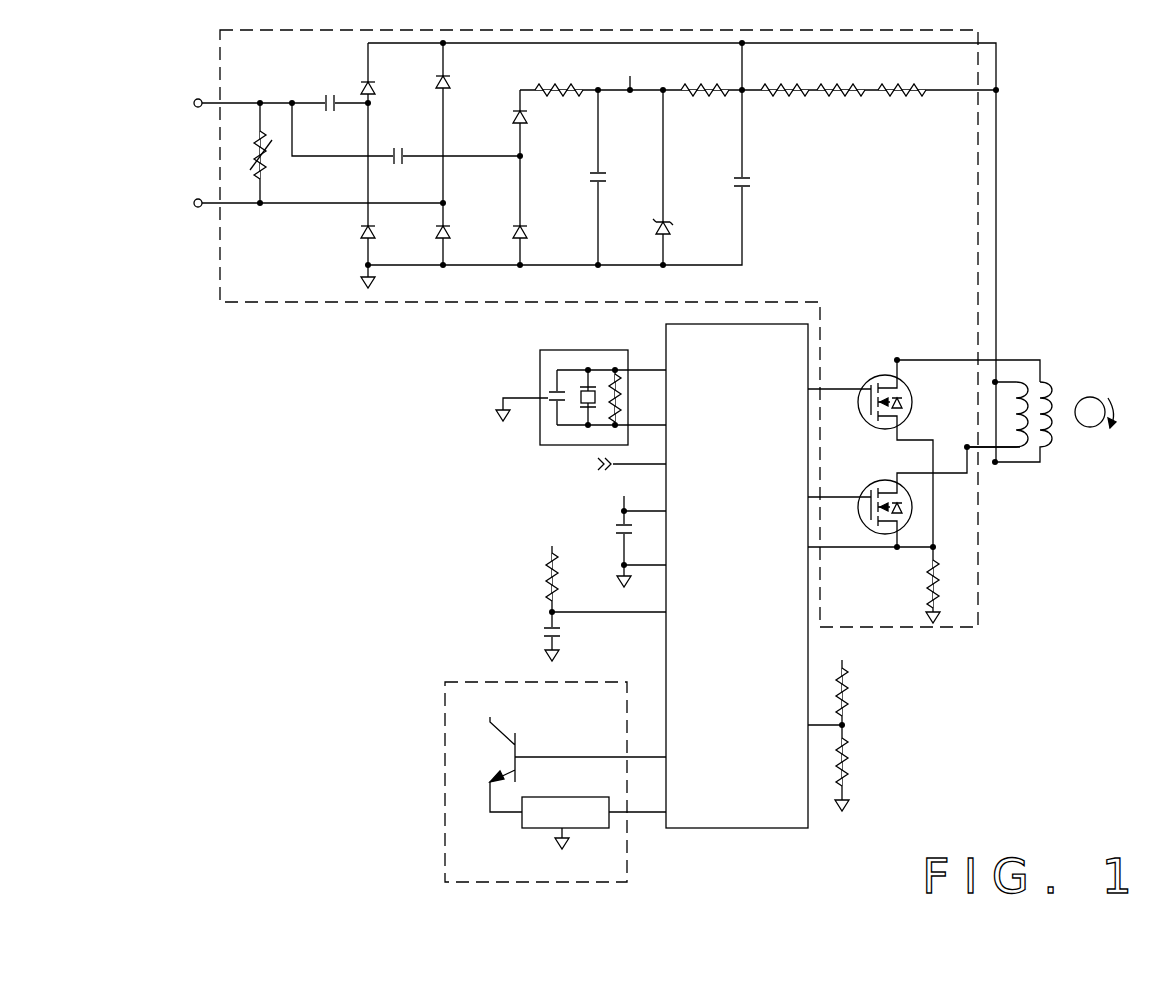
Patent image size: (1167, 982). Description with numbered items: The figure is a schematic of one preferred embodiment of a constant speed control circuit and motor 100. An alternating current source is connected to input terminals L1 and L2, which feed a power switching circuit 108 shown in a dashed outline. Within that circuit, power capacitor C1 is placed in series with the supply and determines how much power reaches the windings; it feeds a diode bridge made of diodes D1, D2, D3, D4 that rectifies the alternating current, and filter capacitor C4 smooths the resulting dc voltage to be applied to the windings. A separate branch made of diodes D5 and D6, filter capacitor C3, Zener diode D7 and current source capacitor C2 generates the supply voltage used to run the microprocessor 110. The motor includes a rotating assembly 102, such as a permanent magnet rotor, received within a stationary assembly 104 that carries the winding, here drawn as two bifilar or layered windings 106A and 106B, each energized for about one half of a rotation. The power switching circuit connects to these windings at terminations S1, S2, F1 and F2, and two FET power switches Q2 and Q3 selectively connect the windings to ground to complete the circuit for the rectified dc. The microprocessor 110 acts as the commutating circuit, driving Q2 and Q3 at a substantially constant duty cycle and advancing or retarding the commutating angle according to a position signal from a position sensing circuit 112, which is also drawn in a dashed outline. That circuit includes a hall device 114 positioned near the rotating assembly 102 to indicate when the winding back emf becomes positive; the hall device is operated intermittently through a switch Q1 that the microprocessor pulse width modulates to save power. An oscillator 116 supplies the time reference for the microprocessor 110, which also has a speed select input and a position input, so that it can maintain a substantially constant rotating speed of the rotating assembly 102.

The constant speed control circuit and motor 100 is at (472, 487).
The rotating assembly 102 is at (1100, 398).
The stationary assembly 104 is at (1054, 332).
The winding 106A is at (1060, 440).
The winding 106B is at (1030, 450).
The power switching circuit 108 is at (368, 302).
The microprocessor 110 is at (745, 828).
The position sensing circuit 112 is at (445, 752).
The hall device 114 is at (542, 830).
The oscillator 116 is at (573, 350).
The input terminal L1 is at (197, 198).
The input terminal L2 is at (197, 98).
The power capacitor C1 is at (332, 90).
The current source capacitor C2 is at (400, 144).
The filter capacitor C3 is at (634, 168).
The filter capacitor C4 is at (750, 182).
The diode D1 is at (378, 86).
The diode D2 is at (360, 231).
The diode D3 is at (451, 84).
The diode D4 is at (473, 222).
The diode D5 is at (529, 116).
The diode D6 is at (529, 232).
The Zener diode D7 is at (671, 228).
The switch Q1 is at (508, 737).
The FET power switch Q2 is at (872, 378).
The FET power switch Q3 is at (872, 484).
The termination S1 is at (995, 382).
The termination S2 is at (897, 360).
The termination F1 is at (967, 446).
The termination F2 is at (995, 462).